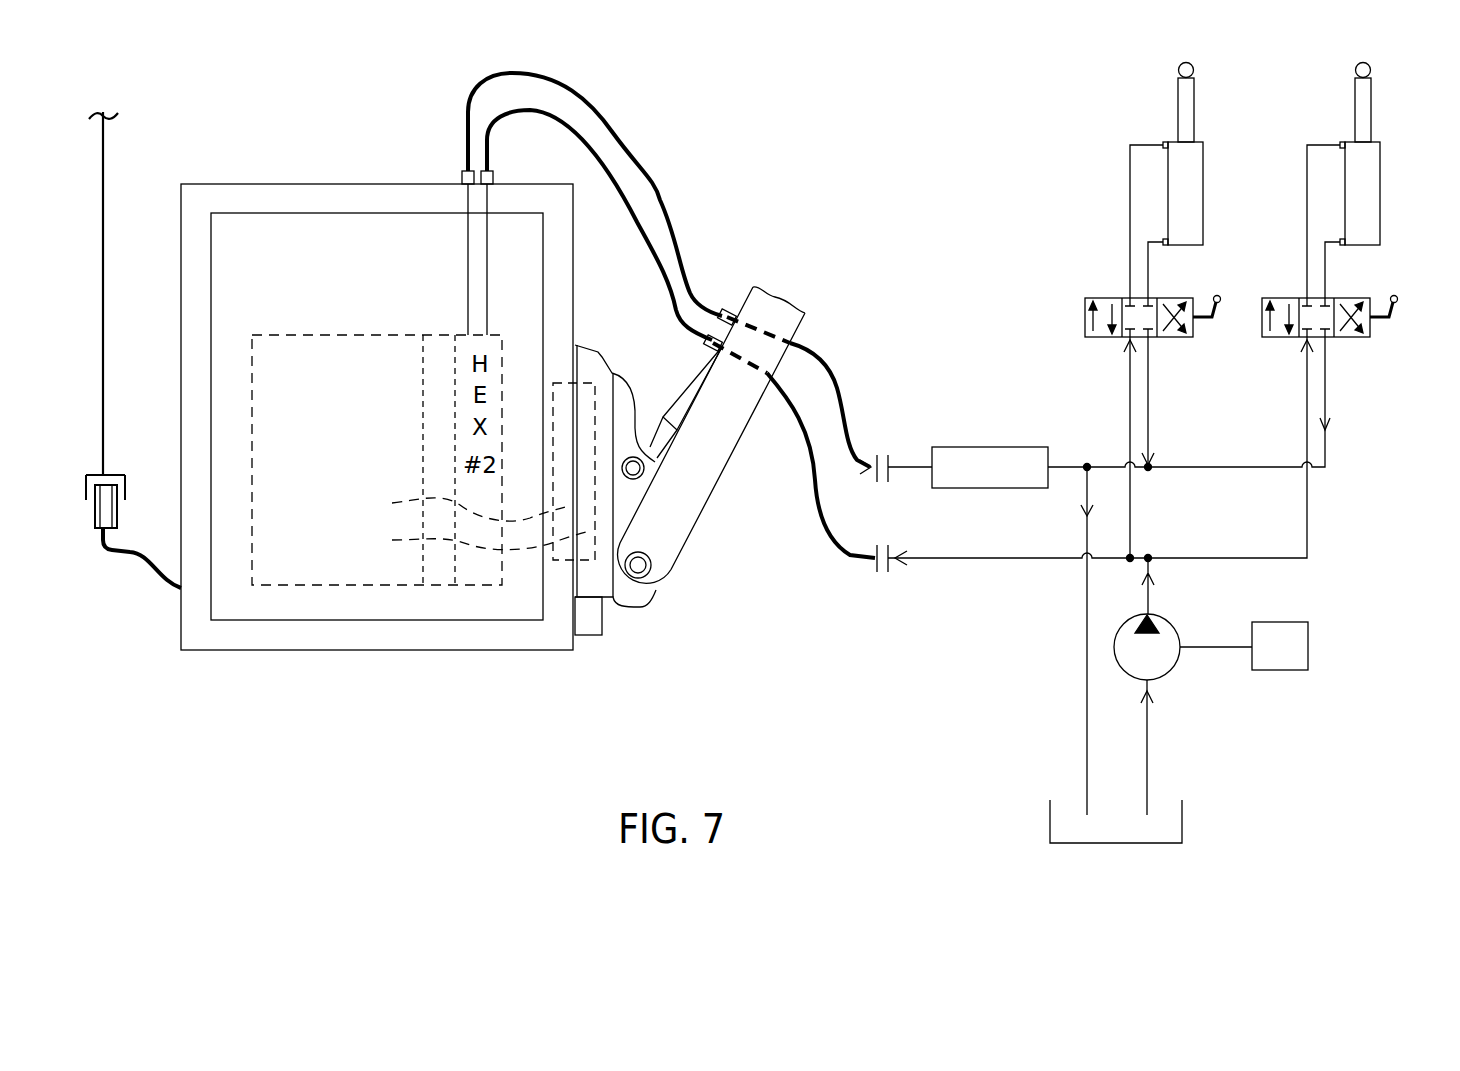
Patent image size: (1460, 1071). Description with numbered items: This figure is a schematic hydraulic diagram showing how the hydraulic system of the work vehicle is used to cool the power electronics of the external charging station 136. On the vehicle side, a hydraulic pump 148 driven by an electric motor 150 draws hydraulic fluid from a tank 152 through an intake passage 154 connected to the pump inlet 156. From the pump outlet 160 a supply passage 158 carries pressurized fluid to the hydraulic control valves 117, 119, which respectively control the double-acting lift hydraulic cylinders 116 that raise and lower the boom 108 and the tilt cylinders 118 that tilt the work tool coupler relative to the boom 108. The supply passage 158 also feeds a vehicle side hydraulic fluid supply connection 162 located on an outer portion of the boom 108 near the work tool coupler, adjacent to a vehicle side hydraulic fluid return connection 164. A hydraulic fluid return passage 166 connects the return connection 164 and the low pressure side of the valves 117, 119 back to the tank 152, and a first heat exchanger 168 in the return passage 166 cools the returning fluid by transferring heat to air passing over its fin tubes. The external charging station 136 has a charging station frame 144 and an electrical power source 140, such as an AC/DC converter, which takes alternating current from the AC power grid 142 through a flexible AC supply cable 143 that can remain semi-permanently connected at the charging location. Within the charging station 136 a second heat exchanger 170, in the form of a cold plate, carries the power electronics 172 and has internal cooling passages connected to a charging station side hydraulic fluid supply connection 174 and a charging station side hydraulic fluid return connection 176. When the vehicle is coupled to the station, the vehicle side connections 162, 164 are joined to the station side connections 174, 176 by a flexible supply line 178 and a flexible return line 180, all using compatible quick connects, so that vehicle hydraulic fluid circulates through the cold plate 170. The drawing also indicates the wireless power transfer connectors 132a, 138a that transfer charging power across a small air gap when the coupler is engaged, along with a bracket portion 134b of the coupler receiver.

The boom 108 is at (712, 432).
The lift hydraulic cylinder 116 is at (1187, 170).
The hydraulic control valve 117 is at (1098, 294).
The tilt cylinder 118 is at (1365, 167).
The hydraulic control valve 119 is at (1296, 294).
The wireless power transfer connector 132a is at (463, 540).
The mounting bracket 134b is at (590, 620).
The external charging station 136 is at (243, 131).
The wireless power transfer connector 138a is at (452, 505).
The electrical power source 140 is at (291, 586).
The AC power grid 142 is at (112, 312).
The flexible AC supply cable 143 is at (131, 554).
The charging station frame 144 is at (305, 197).
The hydraulic pump 148 is at (1177, 624).
The electric motor 150 is at (1300, 622).
The tank 152 is at (1182, 825).
The intake passage 154 is at (1152, 741).
The pump inlet 156 is at (1155, 682).
The supply passage 158 is at (812, 512).
The pump outlet 160 is at (1150, 614).
The vehicle side hydraulic fluid supply connection 162 is at (705, 344).
The vehicle side hydraulic fluid return connection 164 is at (727, 310).
The hydraulic fluid return passage 166 is at (843, 383).
The first heat exchanger 168 is at (971, 446).
The second heat exchanger 170 is at (480, 577).
The power electronics 172 is at (438, 577).
The charging station side hydraulic fluid supply connection 174 is at (493, 177).
The charging station side hydraulic fluid return connection 176 is at (462, 177).
The flexible supply line 178 is at (634, 226).
The flexible return line 180 is at (618, 131).